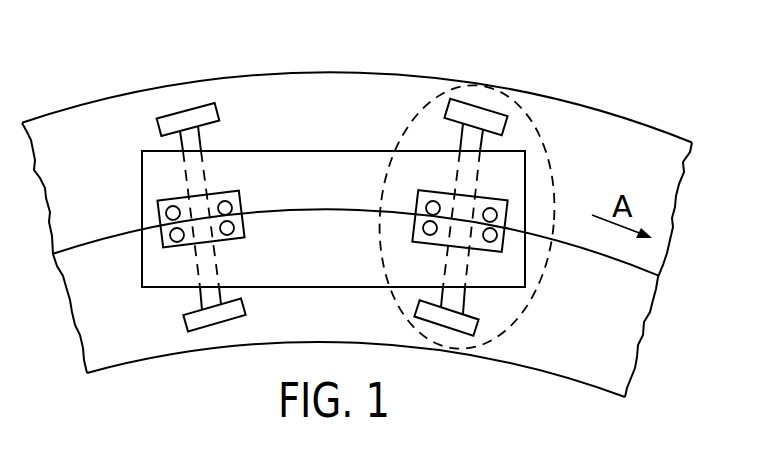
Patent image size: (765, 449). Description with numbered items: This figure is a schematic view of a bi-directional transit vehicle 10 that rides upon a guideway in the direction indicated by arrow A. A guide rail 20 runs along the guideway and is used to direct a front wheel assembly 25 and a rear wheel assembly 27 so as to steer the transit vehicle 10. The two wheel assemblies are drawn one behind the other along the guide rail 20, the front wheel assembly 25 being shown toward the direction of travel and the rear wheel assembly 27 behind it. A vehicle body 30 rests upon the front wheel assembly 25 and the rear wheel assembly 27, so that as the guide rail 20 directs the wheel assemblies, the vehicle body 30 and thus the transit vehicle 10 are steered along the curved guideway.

The transit vehicle 10 is at (201, 68).
The guide rail 20 is at (557, 238).
The front wheel assembly 25 is at (537, 122).
The rear wheel assembly 27 is at (173, 201).
The vehicle body 30 is at (290, 151).